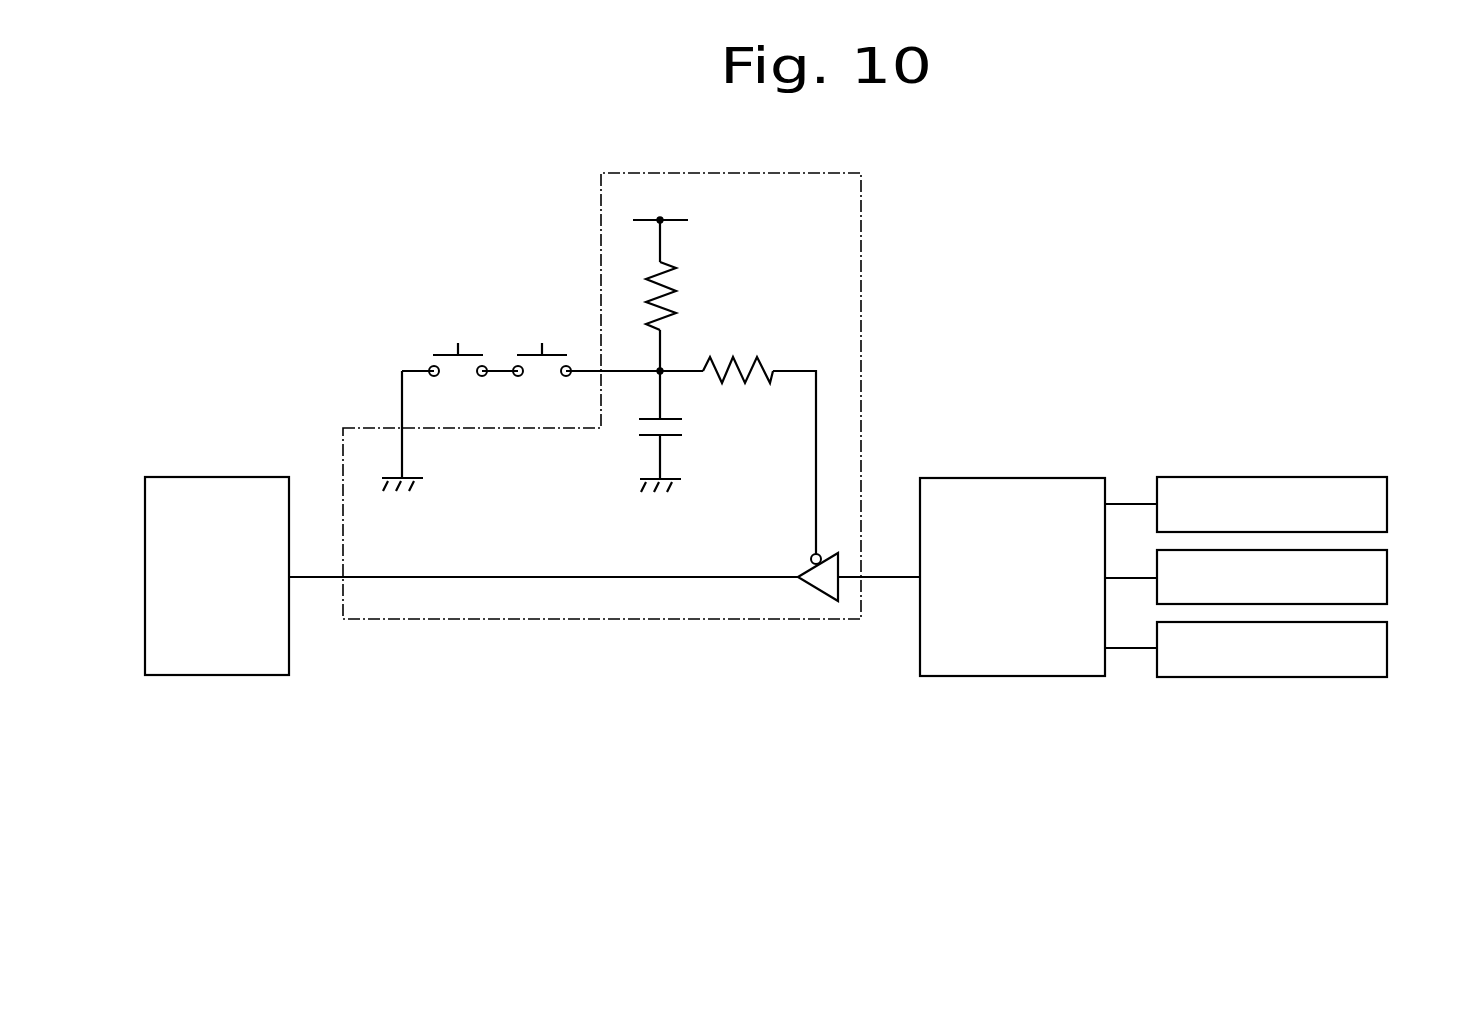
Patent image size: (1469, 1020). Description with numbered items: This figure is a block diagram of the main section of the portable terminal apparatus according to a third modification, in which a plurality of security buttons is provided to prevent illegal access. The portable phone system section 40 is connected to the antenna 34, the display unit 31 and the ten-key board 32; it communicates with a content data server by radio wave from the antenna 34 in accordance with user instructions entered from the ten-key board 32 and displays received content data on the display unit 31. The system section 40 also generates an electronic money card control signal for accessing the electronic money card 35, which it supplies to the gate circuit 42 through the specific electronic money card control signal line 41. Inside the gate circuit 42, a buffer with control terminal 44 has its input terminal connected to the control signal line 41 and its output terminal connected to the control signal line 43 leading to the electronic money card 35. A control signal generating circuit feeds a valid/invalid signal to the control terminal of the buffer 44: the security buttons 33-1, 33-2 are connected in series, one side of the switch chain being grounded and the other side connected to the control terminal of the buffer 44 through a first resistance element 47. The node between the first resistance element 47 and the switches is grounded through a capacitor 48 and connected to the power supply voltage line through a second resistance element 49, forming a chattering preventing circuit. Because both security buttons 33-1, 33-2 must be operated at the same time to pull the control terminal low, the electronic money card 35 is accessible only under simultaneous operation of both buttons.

The electronic money card 35 is at (218, 477).
The specific electronic money card control signal line 43 is at (314, 576).
The gate circuit 42 is at (862, 253).
The security button 33-1 is at (441, 353).
The security button 33-2 is at (525, 353).
The second resistance element 49 is at (684, 279).
The first resistance element 47 is at (736, 356).
The capacitor 48 is at (686, 425).
The buffer with control terminal 44 is at (814, 588).
The specific electronic money card control signal line 41 is at (890, 576).
The portable phone system section 40 is at (1013, 478).
The antenna 34 is at (1388, 502).
The display unit 31 is at (1388, 575).
The ten-key board 32 is at (1388, 646).